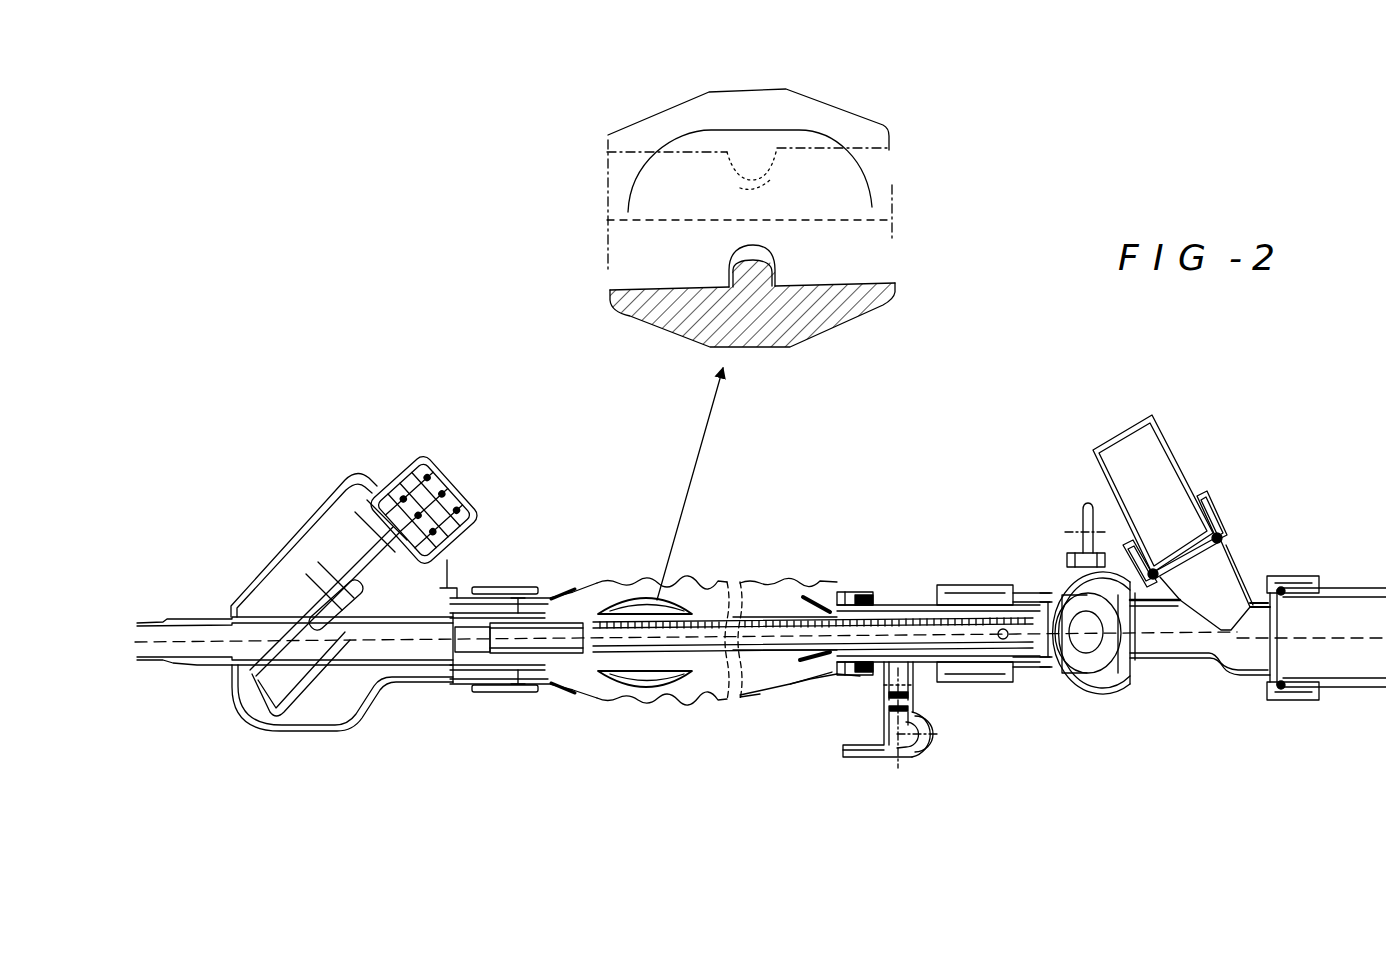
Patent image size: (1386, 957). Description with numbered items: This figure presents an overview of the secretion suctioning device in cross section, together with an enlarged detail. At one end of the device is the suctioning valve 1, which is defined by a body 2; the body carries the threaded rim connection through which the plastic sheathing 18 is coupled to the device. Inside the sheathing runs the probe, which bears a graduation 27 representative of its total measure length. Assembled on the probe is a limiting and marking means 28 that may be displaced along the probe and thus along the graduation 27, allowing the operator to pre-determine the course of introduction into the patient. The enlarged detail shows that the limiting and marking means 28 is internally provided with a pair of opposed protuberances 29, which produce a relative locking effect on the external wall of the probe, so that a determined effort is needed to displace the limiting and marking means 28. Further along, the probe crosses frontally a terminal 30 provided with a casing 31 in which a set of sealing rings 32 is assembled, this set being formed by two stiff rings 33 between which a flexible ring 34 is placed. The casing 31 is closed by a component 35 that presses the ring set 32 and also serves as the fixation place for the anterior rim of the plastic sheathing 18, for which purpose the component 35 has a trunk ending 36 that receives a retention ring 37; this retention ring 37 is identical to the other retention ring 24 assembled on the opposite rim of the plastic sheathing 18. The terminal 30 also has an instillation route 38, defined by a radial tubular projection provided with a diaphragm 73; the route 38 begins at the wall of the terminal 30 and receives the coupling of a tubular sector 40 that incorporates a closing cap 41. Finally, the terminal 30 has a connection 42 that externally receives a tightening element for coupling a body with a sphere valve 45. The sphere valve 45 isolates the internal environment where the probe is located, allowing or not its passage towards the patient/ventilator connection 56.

The suctioning valve 1 is at (352, 434).
The body 2 is at (285, 545).
The plastic sheathing 18 is at (620, 700).
The retention ring 24 is at (567, 595).
The graduation 27 is at (764, 612).
The limiting and marking means 28 is at (868, 307).
The pair of opposed protuberances 29 is at (770, 172).
The terminal 30 is at (913, 600).
The casing 31 is at (861, 592).
The set of sealing rings 32 is at (857, 682).
The stiff rings 33 is at (846, 592).
The flexible ring 34 is at (833, 663).
The component 35 is at (732, 690).
The trunk ending 36 is at (812, 605).
The retention ring 37 is at (826, 604).
The instillation route 38 is at (840, 746).
The tubular sector 40 is at (858, 760).
The closing cap 41 is at (912, 760).
The connection 42 is at (965, 590).
The sphere valve 45 is at (1083, 706).
The patient/ventilator connection 56 is at (1297, 495).
The diaphragm 73 is at (880, 708).